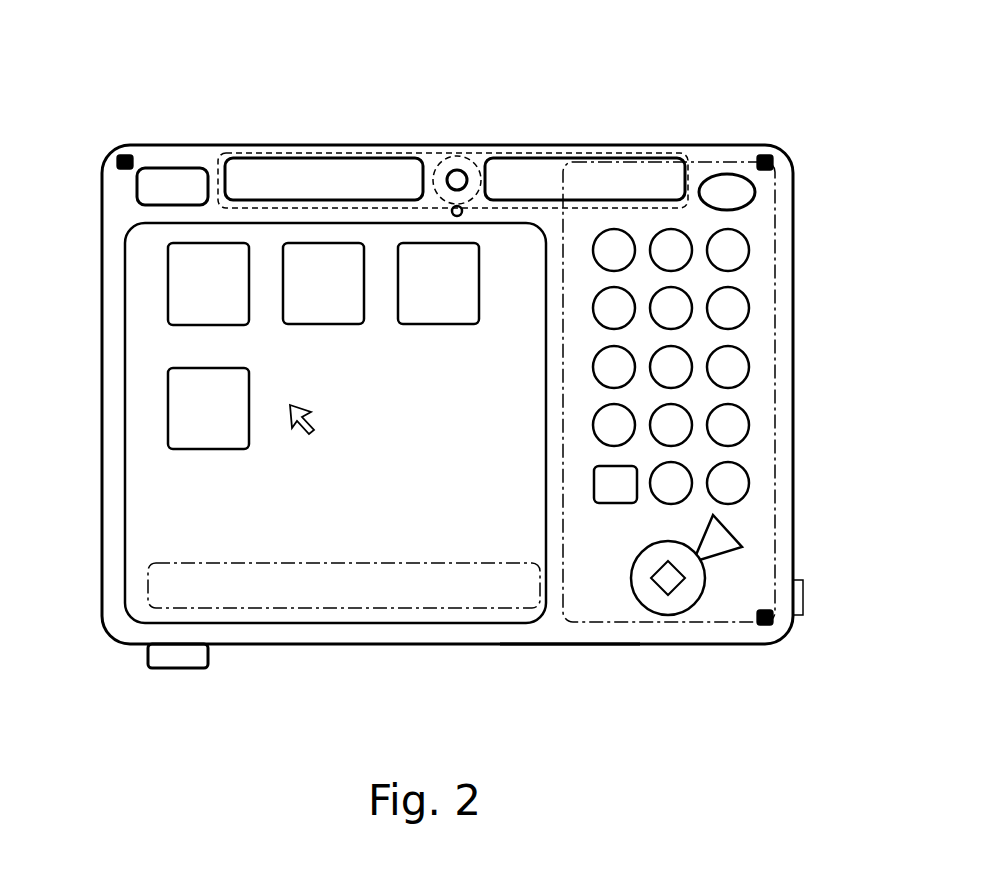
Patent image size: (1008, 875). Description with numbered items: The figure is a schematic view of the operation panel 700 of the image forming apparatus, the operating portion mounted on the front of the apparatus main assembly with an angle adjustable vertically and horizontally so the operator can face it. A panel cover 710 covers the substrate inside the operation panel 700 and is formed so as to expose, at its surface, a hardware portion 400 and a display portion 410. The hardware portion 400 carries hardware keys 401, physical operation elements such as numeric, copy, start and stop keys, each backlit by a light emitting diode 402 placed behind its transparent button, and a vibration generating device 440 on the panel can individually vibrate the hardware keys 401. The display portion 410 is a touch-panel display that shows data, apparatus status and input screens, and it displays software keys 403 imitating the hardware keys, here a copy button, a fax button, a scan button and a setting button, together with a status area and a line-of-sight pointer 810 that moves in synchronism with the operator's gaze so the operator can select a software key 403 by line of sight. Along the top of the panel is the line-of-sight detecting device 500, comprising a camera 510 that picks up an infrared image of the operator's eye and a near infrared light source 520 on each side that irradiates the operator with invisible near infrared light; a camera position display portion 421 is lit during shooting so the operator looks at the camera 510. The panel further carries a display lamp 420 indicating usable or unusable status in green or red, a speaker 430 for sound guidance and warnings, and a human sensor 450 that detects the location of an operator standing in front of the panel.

The operation panel 700 is at (131, 126).
The panel cover 710 is at (563, 645).
The hardware portion 400 is at (773, 503).
The hardware keys 401 is at (775, 346).
The light emitting diodes 402 is at (751, 425).
The software keys 403 is at (150, 328).
The display portion 410 is at (147, 510).
The display lamp 420 is at (148, 190).
The camera position display portion 421 is at (464, 210).
The speaker 430 is at (745, 185).
The vibration generating device 440 is at (800, 597).
The human sensor 450 is at (175, 668).
The line-of-sight detecting device 500 is at (438, 155).
The camera 510 is at (470, 160).
The near infrared light source 520 is at (278, 172).
The line-of-sight pointer 810 is at (317, 419).